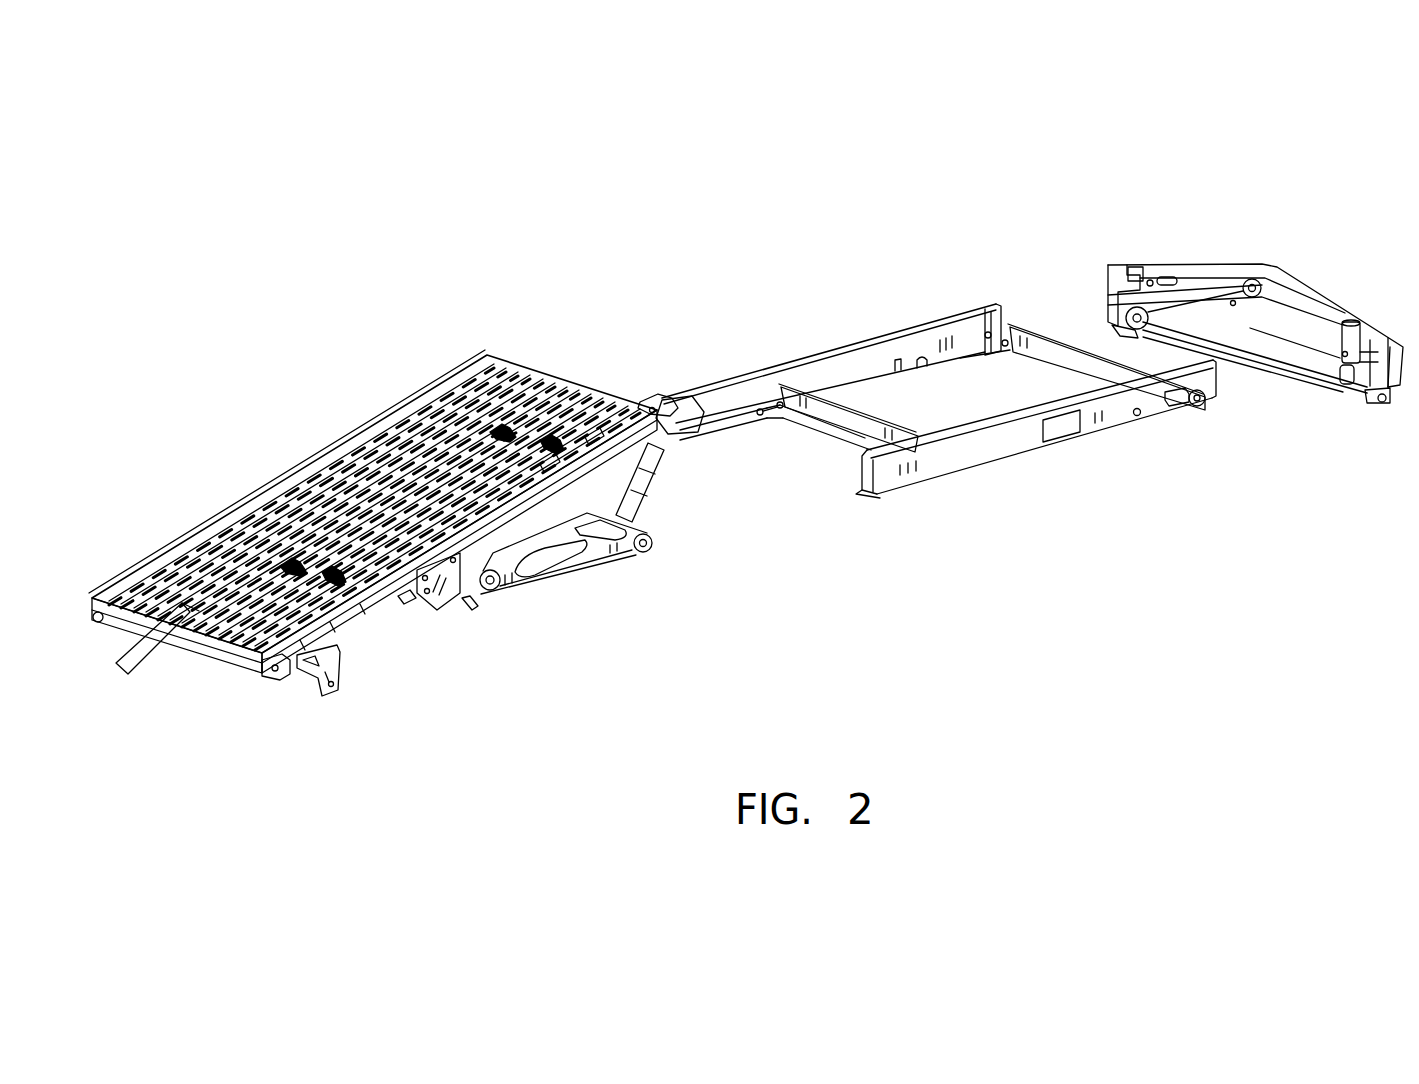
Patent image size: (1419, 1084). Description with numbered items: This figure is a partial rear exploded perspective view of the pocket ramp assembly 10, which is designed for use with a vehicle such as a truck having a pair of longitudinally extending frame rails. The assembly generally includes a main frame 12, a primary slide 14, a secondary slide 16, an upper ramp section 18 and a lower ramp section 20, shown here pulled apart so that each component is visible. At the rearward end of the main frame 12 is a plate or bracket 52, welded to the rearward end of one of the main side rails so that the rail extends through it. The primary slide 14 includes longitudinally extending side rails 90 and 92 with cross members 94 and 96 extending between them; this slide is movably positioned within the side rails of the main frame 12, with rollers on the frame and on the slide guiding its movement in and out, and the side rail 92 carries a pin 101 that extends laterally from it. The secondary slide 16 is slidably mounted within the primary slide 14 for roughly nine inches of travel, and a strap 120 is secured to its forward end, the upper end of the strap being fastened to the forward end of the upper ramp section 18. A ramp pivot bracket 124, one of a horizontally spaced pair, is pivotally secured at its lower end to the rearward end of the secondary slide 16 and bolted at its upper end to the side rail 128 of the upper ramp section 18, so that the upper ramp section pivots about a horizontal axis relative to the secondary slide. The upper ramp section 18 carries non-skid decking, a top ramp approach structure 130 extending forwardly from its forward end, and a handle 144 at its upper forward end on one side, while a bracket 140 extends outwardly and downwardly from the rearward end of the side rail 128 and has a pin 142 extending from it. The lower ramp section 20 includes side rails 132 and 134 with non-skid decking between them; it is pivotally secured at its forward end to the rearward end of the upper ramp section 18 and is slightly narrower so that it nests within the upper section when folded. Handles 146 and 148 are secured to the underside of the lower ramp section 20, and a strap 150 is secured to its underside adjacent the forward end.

The pocket ramp assembly 10 is at (1045, 232).
The main frame 12 is at (1183, 287).
The primary slide 14 is at (843, 310).
The secondary slide 16 is at (580, 557).
The upper ramp section 18 is at (410, 607).
The lower ramp section 20 is at (585, 443).
The plate or bracket 52 is at (1393, 393).
The side rail 90 is at (775, 365).
The side rail 92 is at (983, 442).
The cross member 94 is at (1022, 357).
The cross member 96 is at (853, 417).
The pin 101 is at (1136, 415).
The strap 120 is at (647, 480).
The ramp pivot bracket 124 is at (477, 610).
The side rail 128 is at (370, 618).
The top ramp approach structure 130 is at (697, 417).
The side rail 132 is at (307, 473).
The side rail 134 is at (263, 667).
The bracket 140 is at (333, 667).
The pin 142 is at (333, 687).
The handle 144 is at (647, 403).
The handle 146 is at (528, 430).
The handle 148 is at (293, 567).
The strap 150 is at (150, 660).